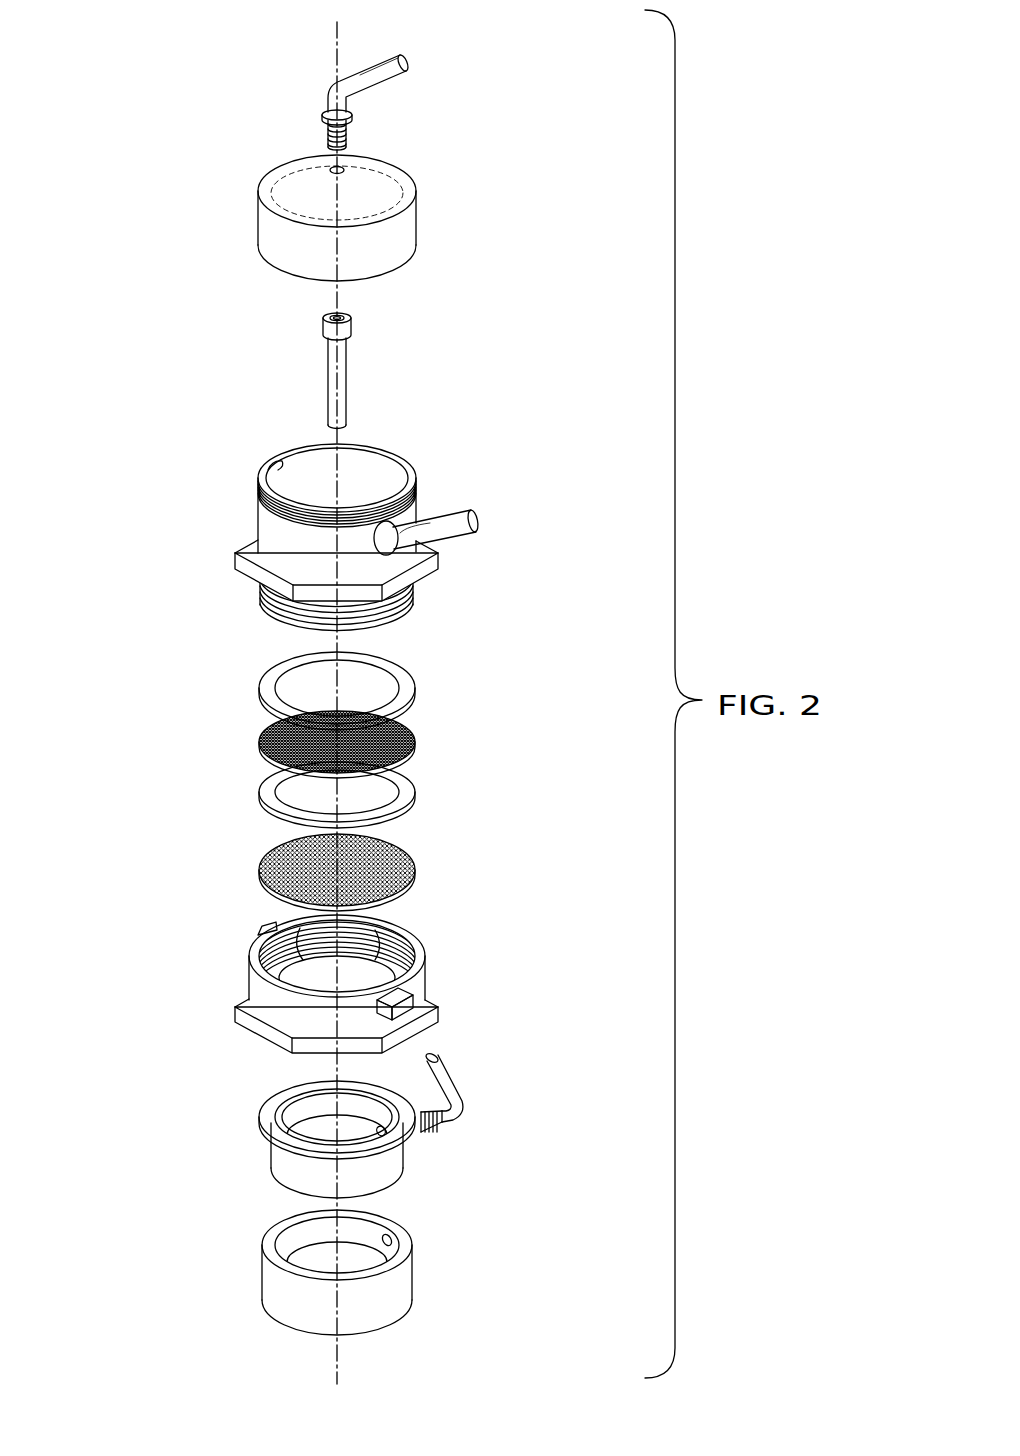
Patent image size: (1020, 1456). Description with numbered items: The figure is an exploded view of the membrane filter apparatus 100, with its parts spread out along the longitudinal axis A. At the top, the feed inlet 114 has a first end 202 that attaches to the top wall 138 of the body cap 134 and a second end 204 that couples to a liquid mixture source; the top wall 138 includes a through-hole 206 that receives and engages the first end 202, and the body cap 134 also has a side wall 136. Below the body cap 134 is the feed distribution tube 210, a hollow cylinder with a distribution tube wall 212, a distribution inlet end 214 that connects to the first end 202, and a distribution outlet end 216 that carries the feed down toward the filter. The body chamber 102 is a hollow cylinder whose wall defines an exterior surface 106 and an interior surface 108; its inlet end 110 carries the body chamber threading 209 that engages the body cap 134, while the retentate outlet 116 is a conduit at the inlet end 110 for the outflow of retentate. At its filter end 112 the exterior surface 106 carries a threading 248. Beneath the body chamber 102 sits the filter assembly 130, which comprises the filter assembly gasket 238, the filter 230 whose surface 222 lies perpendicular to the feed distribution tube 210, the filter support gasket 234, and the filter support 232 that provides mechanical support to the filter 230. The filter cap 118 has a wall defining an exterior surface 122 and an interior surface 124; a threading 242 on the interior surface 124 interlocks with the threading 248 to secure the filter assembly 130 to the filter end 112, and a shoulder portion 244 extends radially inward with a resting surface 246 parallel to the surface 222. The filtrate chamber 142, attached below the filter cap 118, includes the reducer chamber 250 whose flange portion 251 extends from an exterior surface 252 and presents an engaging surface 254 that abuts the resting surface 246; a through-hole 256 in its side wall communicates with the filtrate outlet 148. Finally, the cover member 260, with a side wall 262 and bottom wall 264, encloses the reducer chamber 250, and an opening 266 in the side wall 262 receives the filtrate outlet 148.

The membrane filter apparatus 100 is at (153, 73).
The longitudinal axis A is at (335, 53).
The body chamber 102 is at (430, 521).
The exterior surface 106 is at (258, 518).
The interior surface 108 is at (266, 476).
The inlet end 110 is at (424, 465).
The filter end 112 is at (432, 596).
The feed inlet 114 is at (333, 94).
The retentate outlet 116 is at (478, 527).
The filter cap 118 is at (458, 986).
The exterior surface 122 is at (248, 975).
The interior surface 124 is at (430, 952).
The filter assembly 130 is at (518, 708).
The body cap 134 is at (455, 170).
The side wall 136 is at (258, 214).
The top wall 138 is at (404, 183).
The filtrate chamber 142 is at (578, 1068).
The filtrate outlet 148 is at (445, 1087).
The first end 202 is at (320, 136).
The second end 204 is at (410, 66).
The through-hole 206 is at (344, 167).
The body chamber threading 209 is at (420, 497).
The feed distribution tube 210 is at (362, 352).
The distribution tube wall 212 is at (326, 350).
The distribution inlet end 214 is at (322, 320).
The distribution outlet end 216 is at (352, 430).
The surface 222 is at (262, 738).
The filter 230 is at (418, 738).
The filter support 232 is at (410, 848).
The filter support gasket 234 is at (262, 790).
The filter assembly gasket 238 is at (262, 688).
The threading 242 is at (272, 948).
The shoulder portion 244 is at (398, 950).
The resting surface 246 is at (298, 940).
The threading 248 is at (262, 605).
The reducer chamber 250 is at (488, 1106).
The flange portion 251 is at (262, 1135).
The exterior surface 252 is at (276, 1181).
The engaging surface 254 is at (270, 1157).
The through-hole 256 is at (300, 1110).
The cover member 260 is at (433, 1215).
The side wall 262 is at (266, 1258).
The bottom wall 264 is at (286, 1320).
The opening 266 is at (278, 1242).